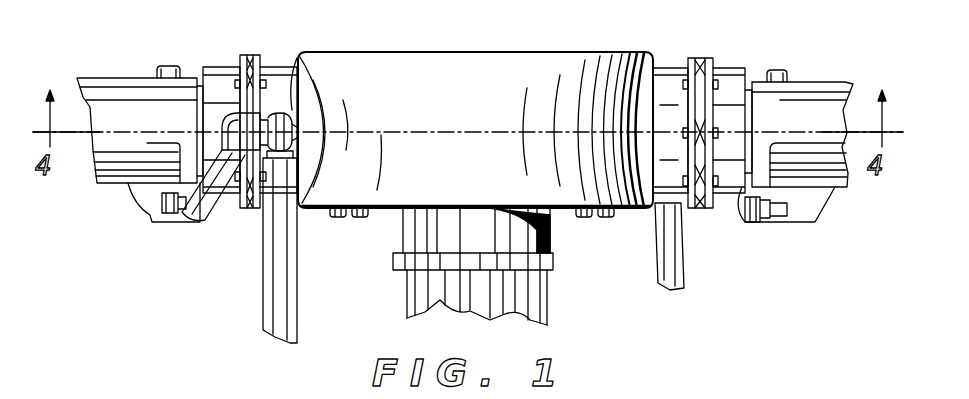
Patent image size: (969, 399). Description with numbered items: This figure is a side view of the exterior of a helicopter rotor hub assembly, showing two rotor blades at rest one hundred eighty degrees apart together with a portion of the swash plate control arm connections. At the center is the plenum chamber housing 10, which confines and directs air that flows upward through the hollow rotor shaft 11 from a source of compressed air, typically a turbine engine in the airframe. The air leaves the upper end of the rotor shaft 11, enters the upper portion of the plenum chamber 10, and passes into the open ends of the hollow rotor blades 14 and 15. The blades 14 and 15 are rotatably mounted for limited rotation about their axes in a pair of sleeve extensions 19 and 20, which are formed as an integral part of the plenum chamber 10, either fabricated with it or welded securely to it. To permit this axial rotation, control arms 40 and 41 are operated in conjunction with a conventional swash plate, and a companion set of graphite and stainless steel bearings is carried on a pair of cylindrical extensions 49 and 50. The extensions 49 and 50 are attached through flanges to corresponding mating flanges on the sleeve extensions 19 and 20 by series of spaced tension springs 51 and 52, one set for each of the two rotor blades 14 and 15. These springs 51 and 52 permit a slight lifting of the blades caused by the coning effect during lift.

The plenum chamber housing 10 is at (468, 52).
The hollow rotor shaft 11 is at (548, 300).
The rotor blade 14 is at (117, 78).
The rotor blade 15 is at (822, 82).
The sleeve extension 19 is at (290, 60).
The sleeve extension 20 is at (668, 68).
The control arm 40 is at (298, 297).
The control arm 41 is at (688, 270).
The cylindrical extension 49 is at (218, 67).
The cylindrical extension 50 is at (733, 68).
The tension springs 51 is at (250, 55).
The tension springs 52 is at (690, 58).